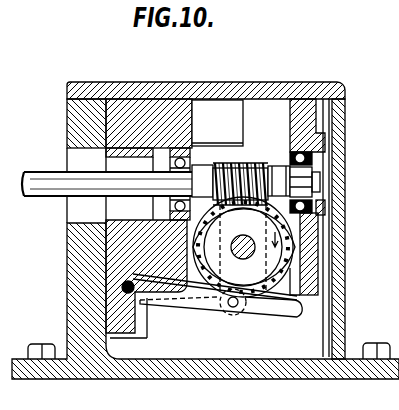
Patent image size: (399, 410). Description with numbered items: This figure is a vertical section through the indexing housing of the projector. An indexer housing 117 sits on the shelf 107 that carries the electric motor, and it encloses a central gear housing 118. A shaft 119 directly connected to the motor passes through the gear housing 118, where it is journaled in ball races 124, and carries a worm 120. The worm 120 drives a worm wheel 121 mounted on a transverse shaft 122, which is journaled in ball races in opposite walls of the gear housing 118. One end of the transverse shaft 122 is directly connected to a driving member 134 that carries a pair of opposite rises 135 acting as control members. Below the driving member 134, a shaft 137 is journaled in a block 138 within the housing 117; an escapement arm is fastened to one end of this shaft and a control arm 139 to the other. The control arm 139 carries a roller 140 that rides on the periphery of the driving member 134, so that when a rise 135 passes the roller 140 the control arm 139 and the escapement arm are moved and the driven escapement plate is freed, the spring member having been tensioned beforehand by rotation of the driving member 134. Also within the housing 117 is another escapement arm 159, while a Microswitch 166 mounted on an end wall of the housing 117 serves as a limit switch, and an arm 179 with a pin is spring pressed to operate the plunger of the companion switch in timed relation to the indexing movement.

The shelf 107 is at (63, 355).
The indexer housing 117 is at (344, 110).
The central gear housing 118 is at (173, 110).
The shaft 119 is at (47, 182).
The worm 120 is at (250, 167).
The worm wheel 121 is at (328, 215).
The transverse shaft 122 is at (296, 247).
The ball races 124 is at (165, 201).
The driving member 134 is at (282, 268).
The rises 135 is at (302, 248).
The shaft 137 is at (123, 287).
The block 138 is at (115, 252).
The control arm 139 is at (263, 315).
The roller 140 is at (231, 316).
The escapement arm 159 is at (183, 300).
The Microswitch 166 is at (225, 113).
The arm 179 is at (265, 152).